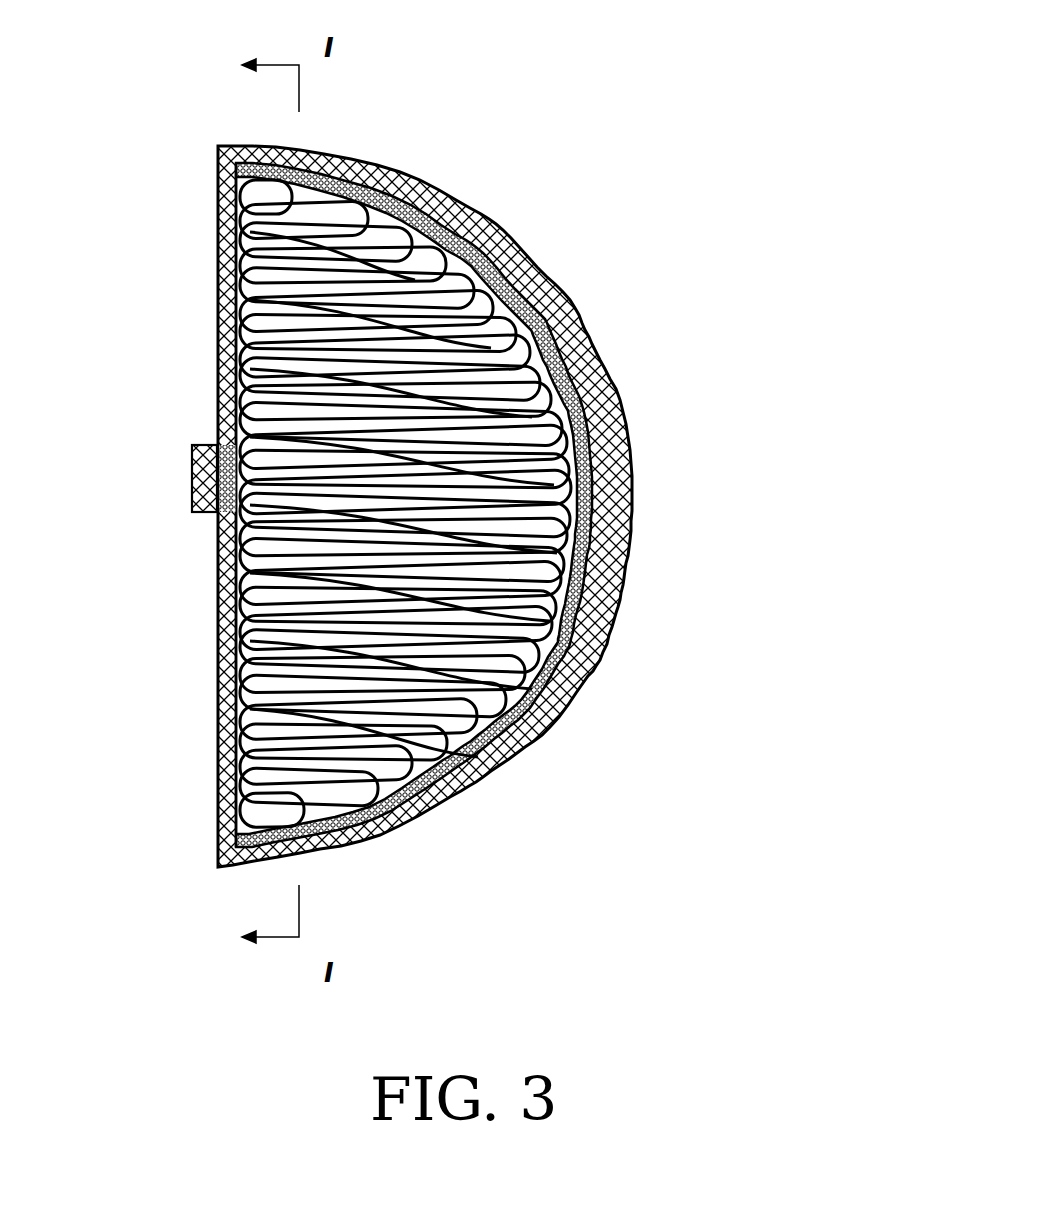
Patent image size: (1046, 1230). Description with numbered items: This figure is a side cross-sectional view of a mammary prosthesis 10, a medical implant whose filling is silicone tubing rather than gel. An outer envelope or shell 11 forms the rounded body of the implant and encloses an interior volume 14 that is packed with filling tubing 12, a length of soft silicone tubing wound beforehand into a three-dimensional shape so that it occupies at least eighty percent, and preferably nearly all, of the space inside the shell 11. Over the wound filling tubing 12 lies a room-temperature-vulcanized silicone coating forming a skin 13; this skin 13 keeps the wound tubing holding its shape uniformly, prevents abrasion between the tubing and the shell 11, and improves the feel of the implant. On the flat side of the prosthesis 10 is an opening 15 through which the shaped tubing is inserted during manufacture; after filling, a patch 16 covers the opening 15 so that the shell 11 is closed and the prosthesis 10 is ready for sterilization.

The mammary prosthesis 10 is at (505, 195).
The shell 11 is at (577, 307).
The filling tubing 12 is at (510, 595).
The skin 13 is at (623, 430).
The interior volume 14 is at (613, 373).
The opening 15 is at (222, 468).
The patch 16 is at (193, 493).